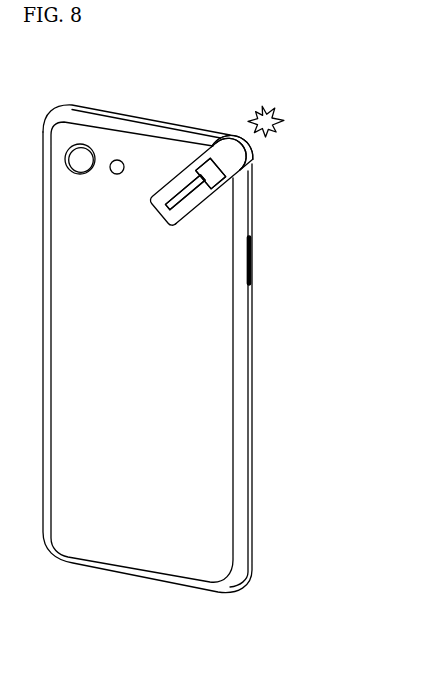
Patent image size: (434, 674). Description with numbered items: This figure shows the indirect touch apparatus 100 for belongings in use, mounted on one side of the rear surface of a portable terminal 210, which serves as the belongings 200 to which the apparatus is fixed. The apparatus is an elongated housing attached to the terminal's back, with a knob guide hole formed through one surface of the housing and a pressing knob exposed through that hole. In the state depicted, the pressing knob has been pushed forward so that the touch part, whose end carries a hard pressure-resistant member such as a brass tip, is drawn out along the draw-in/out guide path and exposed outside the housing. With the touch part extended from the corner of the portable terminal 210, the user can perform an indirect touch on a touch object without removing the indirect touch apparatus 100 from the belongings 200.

The indirect touch apparatus for belongings 100 is at (236, 189).
The belongings 200 is at (213, 349).
The portable terminal 210 is at (252, 362).